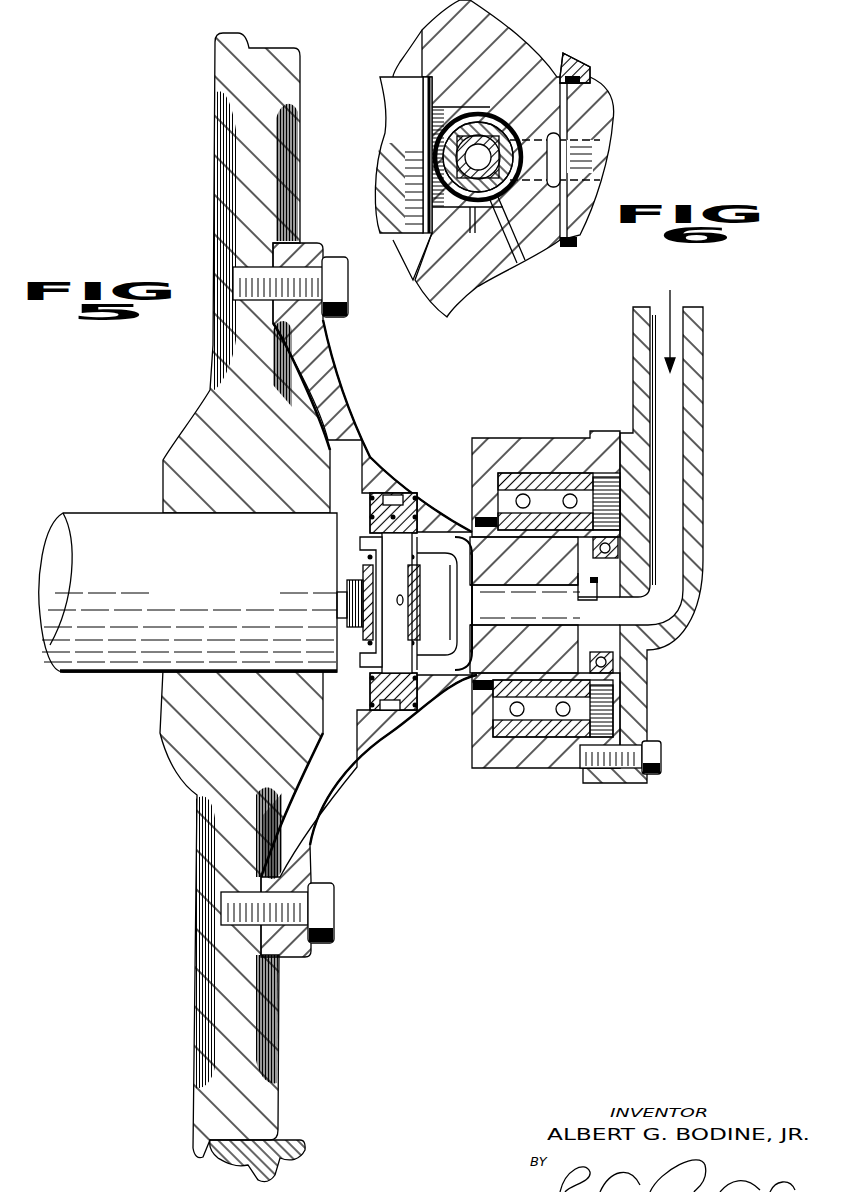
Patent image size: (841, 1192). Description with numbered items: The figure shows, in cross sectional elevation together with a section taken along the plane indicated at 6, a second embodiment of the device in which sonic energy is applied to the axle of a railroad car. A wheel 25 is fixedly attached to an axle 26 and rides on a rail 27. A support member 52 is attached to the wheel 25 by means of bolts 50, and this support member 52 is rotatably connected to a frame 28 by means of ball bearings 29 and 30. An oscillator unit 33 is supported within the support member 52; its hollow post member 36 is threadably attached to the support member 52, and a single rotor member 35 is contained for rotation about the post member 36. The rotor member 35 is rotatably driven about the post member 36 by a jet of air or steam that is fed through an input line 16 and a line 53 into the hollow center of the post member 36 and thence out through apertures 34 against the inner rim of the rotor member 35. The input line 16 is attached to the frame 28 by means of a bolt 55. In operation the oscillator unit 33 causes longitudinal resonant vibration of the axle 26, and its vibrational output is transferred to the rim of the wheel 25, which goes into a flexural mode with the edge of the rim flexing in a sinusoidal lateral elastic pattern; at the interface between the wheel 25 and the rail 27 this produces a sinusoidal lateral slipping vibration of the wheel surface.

In FIG. 5, the input line 16 is at (693, 443).
In FIG. 5, the wheel 25 is at (253, 1107).
In FIG. 5, the axle 26 is at (188, 592).
In FIG. 6, the axle 26 is at (393, 93).
In FIG. 5, the rail 27 is at (303, 1143).
In FIG. 5, the frame 28 is at (487, 447).
In FIG. 5, the ball bearing 29 is at (565, 500).
In FIG. 5, the ball bearing 30 is at (607, 547).
In FIG. 5, the oscillator unit 33 is at (400, 487).
In FIG. 6, the oscillator unit 33 is at (460, 120).
In FIG. 5, the apertures 34 is at (340, 628).
In FIG. 6, the apertures 34 is at (557, 133).
In FIG. 5, the rotor member 35 is at (337, 583).
In FIG. 6, the rotor member 35 is at (489, 95).
In FIG. 5, the hollow post member 36 is at (335, 610).
In FIG. 6, the hollow post member 36 is at (470, 233).
In FIG. 5, the bolts 50 is at (332, 290).
In FIG. 5, the support member 52 is at (333, 403).
In FIG. 6, the support member 52 is at (597, 110).
In FIG. 5, the line 53 is at (420, 506).
In FIG. 6, the line 53 is at (585, 140).
In FIG. 5, the bolt 55 is at (660, 753).
In FIG. 5, the section plane 6— 6 is at (517, 596).